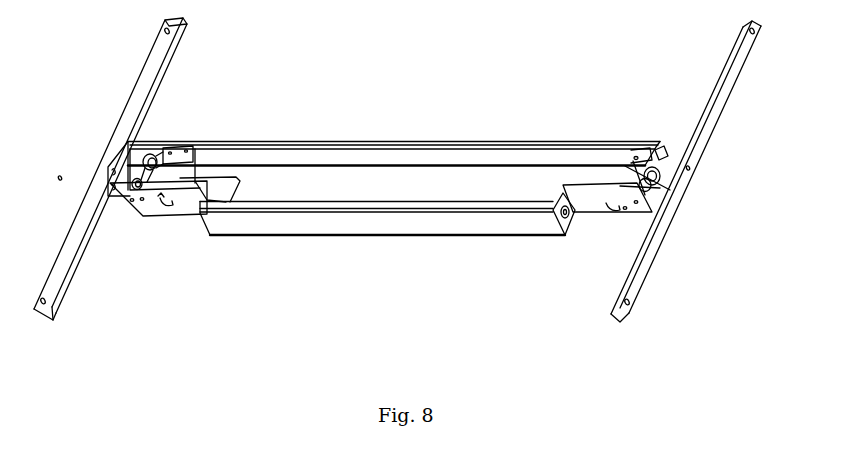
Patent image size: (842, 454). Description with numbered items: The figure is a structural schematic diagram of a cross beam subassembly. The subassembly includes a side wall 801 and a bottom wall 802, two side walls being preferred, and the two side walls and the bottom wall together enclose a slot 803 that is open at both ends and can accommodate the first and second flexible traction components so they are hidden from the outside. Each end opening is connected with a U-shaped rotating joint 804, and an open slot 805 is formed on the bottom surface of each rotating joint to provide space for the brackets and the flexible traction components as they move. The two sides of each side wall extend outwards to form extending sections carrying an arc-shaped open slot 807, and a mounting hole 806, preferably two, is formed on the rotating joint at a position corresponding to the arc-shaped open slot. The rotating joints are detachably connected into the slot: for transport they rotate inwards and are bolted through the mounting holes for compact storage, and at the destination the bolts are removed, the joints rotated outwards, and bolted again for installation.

The side wall 801 is at (343, 158).
The bottom wall 802 is at (430, 182).
The slot 803 is at (282, 141).
The rotating joint 804 is at (148, 146).
The open slot 805 is at (160, 160).
The mounting hole 806 is at (660, 156).
The arc-shaped open slot 807 is at (168, 201).